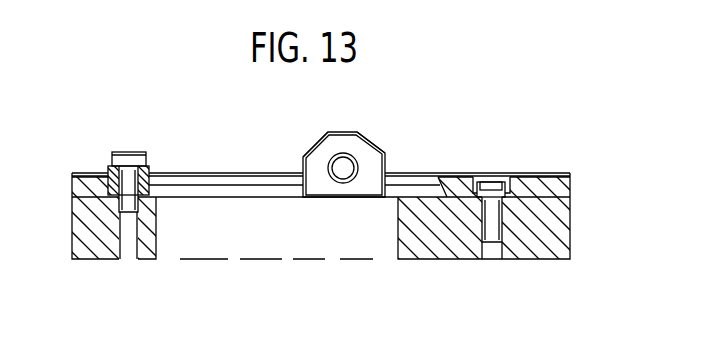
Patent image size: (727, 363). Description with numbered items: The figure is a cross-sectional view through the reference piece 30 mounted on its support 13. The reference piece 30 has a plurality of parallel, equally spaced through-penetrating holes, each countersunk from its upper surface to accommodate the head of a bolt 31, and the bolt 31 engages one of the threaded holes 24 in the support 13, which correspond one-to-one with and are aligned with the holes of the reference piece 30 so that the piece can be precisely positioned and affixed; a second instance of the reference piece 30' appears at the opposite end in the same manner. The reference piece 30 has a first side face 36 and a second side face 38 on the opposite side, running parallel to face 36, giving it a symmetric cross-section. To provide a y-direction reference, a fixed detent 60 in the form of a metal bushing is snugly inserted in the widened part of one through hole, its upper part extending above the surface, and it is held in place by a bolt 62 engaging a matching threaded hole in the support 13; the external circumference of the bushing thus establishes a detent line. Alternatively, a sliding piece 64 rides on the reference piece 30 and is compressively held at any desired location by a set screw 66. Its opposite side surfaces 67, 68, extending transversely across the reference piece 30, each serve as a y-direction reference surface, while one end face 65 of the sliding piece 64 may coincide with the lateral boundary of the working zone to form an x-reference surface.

The support 13 is at (578, 237).
The threaded holes 24 is at (116, 240).
The reference piece 30 is at (360, 200).
The plate 30' is at (360, 200).
The bolt 31 is at (488, 208).
The first side face 36 is at (438, 184).
The second side face 38 is at (542, 180).
The fixed detent 60 is at (153, 168).
The bolt 62 is at (131, 157).
The sliding piece 64 is at (381, 135).
The end face 65 is at (323, 186).
The set screw 66 is at (343, 160).
The side surface 67 is at (302, 163).
The side surface 68 is at (387, 164).